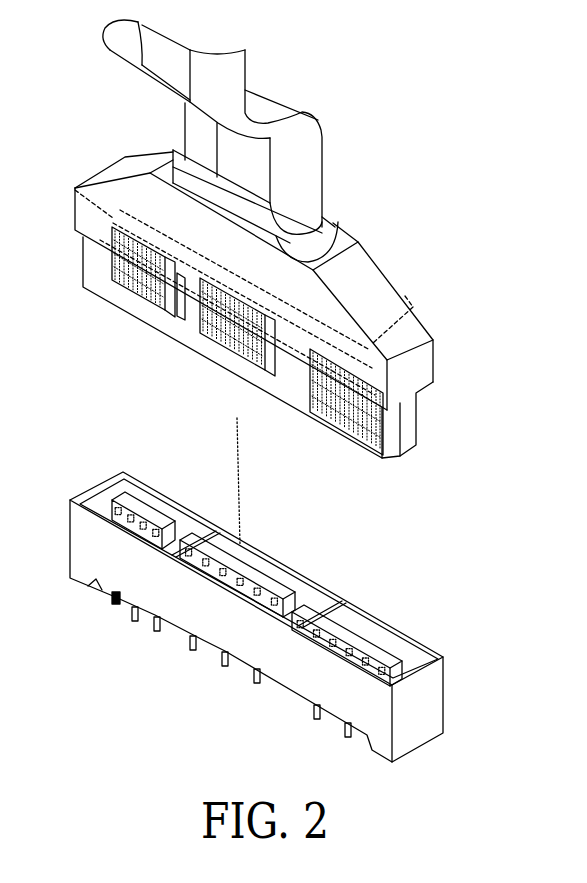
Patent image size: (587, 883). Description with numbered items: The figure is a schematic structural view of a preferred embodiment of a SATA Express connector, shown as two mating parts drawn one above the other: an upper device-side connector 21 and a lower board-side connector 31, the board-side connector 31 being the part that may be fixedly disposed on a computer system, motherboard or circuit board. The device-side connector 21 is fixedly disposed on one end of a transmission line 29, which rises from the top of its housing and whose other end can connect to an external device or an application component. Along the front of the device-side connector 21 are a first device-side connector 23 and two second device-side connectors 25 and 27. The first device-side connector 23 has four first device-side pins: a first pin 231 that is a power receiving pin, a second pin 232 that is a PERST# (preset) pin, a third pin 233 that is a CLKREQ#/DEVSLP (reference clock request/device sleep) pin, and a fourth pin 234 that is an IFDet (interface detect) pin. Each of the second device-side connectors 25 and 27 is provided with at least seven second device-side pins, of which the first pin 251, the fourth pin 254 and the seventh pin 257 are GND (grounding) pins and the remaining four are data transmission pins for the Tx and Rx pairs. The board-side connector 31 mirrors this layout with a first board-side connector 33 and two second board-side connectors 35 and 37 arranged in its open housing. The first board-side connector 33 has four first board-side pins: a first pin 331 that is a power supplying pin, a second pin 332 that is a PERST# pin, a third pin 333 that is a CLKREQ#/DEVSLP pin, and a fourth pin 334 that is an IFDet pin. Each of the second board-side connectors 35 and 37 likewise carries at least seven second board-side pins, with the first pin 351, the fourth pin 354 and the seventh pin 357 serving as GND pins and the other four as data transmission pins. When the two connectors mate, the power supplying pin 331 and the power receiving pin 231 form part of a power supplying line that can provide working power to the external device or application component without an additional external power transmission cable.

The device-side connector 21 is at (427, 356).
The first device-side connector 23 is at (75, 188).
The second device-side connector 25 is at (345, 268).
The second device-side connector 27 is at (413, 307).
The transmission line 29 is at (312, 171).
The first pin 231 is at (110, 272).
The second pin 232 is at (117, 295).
The third pin 233 is at (127, 318).
The fourth pin 234 is at (150, 332).
The first pin 251 is at (197, 336).
The fourth pin 254 is at (226, 360).
The seventh pin 257 is at (265, 378).
The board-side connector 31 is at (432, 703).
The first board-side connector 33 is at (148, 503).
The first pin 331 is at (98, 517).
The second pin 332 is at (102, 530).
The third pin 333 is at (100, 583).
The fourth pin 334 is at (131, 570).
The second board-side connector 35 is at (250, 573).
The first pin 351 is at (183, 577).
The fourth pin 354 is at (222, 590).
The seventh pin 357 is at (250, 603).
The second board-side connector 37 is at (365, 632).